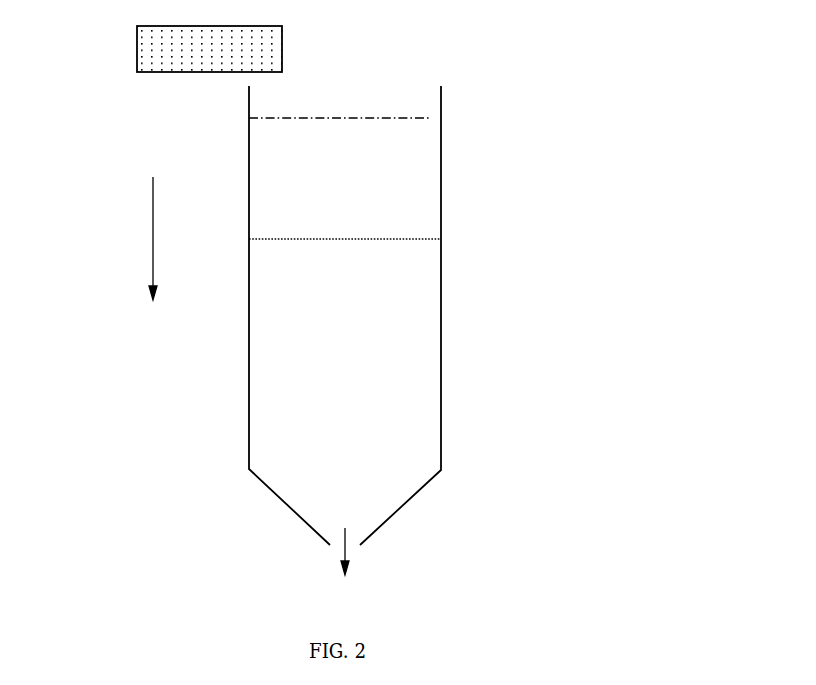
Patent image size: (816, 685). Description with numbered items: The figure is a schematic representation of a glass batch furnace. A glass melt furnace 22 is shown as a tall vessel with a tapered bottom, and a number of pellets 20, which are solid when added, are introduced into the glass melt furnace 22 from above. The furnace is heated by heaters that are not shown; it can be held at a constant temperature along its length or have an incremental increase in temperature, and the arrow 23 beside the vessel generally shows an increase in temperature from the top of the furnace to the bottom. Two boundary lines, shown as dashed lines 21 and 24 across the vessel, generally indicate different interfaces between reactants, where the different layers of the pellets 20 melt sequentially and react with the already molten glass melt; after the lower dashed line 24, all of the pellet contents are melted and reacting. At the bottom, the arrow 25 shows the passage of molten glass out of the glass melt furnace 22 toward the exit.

The pellets 20 is at (137, 42).
The dashed line 21 is at (300, 118).
The glass melt furnace 22 is at (441, 133).
The arrow 23 is at (153, 224).
The dashed line 24 is at (390, 239).
The arrow 25 is at (345, 560).